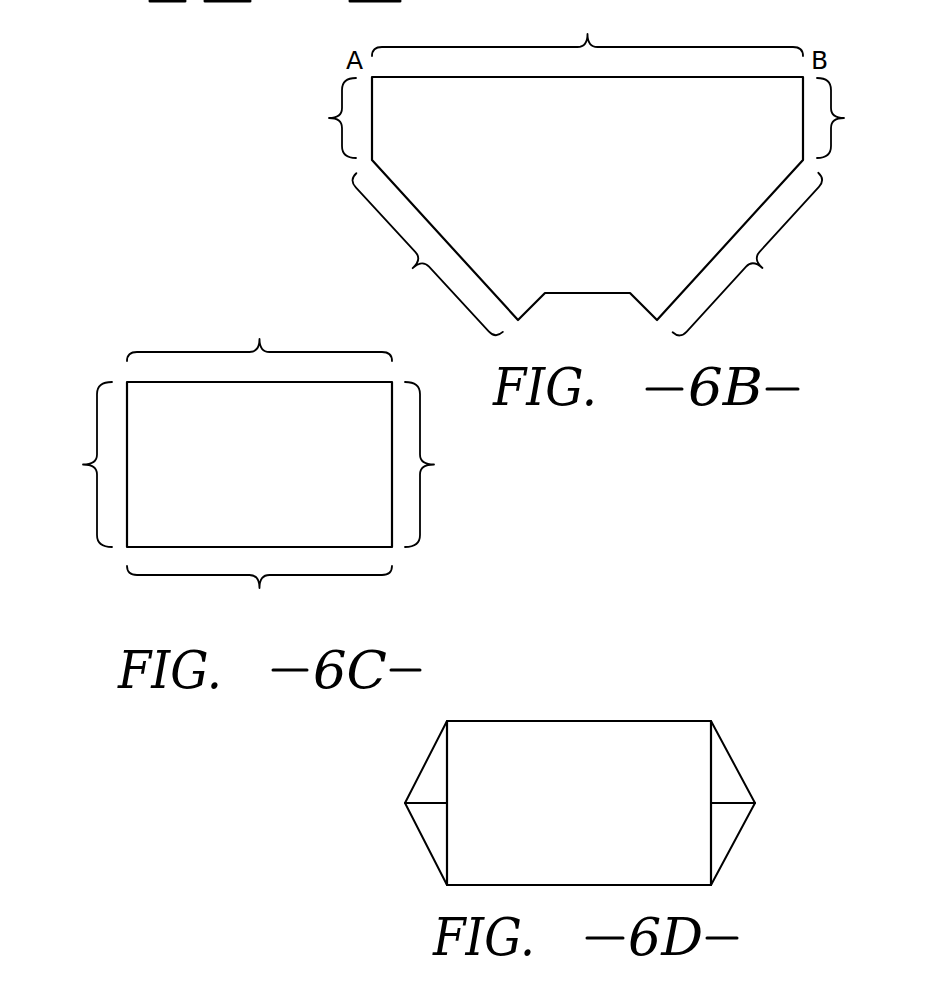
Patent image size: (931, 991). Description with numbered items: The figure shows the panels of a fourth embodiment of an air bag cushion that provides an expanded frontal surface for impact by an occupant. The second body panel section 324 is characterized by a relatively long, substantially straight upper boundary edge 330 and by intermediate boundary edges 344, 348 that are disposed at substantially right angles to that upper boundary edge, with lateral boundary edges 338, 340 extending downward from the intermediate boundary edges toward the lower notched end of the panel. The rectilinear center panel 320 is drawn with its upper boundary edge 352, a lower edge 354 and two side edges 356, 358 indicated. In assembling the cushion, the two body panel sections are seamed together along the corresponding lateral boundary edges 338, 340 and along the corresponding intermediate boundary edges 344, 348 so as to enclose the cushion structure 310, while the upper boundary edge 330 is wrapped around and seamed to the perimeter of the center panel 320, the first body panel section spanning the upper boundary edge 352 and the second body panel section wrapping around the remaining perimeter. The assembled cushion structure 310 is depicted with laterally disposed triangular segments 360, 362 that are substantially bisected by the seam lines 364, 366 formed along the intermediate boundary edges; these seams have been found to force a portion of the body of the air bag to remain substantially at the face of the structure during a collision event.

In FIG. 6D, the cushion structure 310 is at (579, 748).
In FIG. 6C, the center panel 320 is at (285, 478).
In FIG. 6B, the second body panel section 324 is at (566, 188).
In FIG. 6B, the upper boundary edge 330 is at (587, 28).
In FIG. 6B, the lateral boundary edge 338 is at (420, 260).
In FIG. 6B, the lateral boundary edge 340 is at (754, 260).
In FIG. 6B, the intermediate boundary edge 344 is at (315, 118).
In FIG. 6B, the intermediate boundary edge 348 is at (860, 118).
In FIG. 6C, the upper boundary edge of center panel 352 is at (259, 331).
In FIG. 6C, the panel bottom width 354 is at (259, 596).
In FIG. 6C, the panel left height 356 is at (70, 464).
In FIG. 6C, the panel right height 358 is at (449, 464).
In FIG. 6D, the triangular segment 360 is at (402, 803).
In FIG. 6D, the triangular segment 362 is at (758, 803).
In FIG. 6D, the seam line 364 is at (427, 798).
In FIG. 6D, the seam line 366 is at (733, 798).